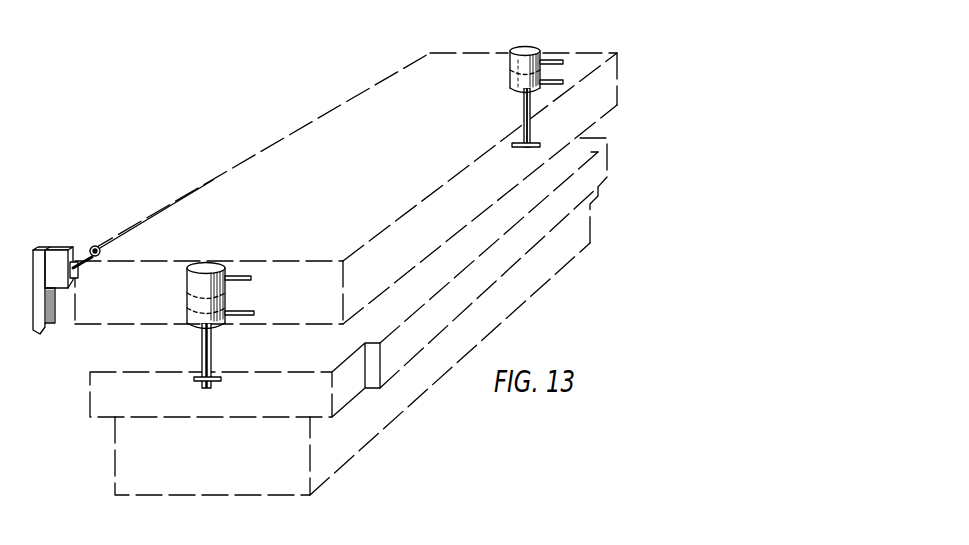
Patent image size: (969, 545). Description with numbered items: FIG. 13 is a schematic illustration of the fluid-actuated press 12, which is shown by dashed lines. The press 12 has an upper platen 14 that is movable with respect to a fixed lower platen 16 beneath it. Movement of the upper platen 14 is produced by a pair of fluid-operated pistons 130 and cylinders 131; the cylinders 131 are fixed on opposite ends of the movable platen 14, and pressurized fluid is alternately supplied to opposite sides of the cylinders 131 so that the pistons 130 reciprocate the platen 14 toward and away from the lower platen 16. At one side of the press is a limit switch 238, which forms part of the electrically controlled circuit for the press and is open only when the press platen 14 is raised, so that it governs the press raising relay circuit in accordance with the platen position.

The fluid-actuated press 12 is at (369, 274).
The upper platen 14 is at (618, 82).
The fixed lower platen 16 is at (550, 218).
The fluid-operated pistons 130 is at (202, 344).
The cylinders 131 is at (186, 278).
The limit switch 238 is at (67, 246).